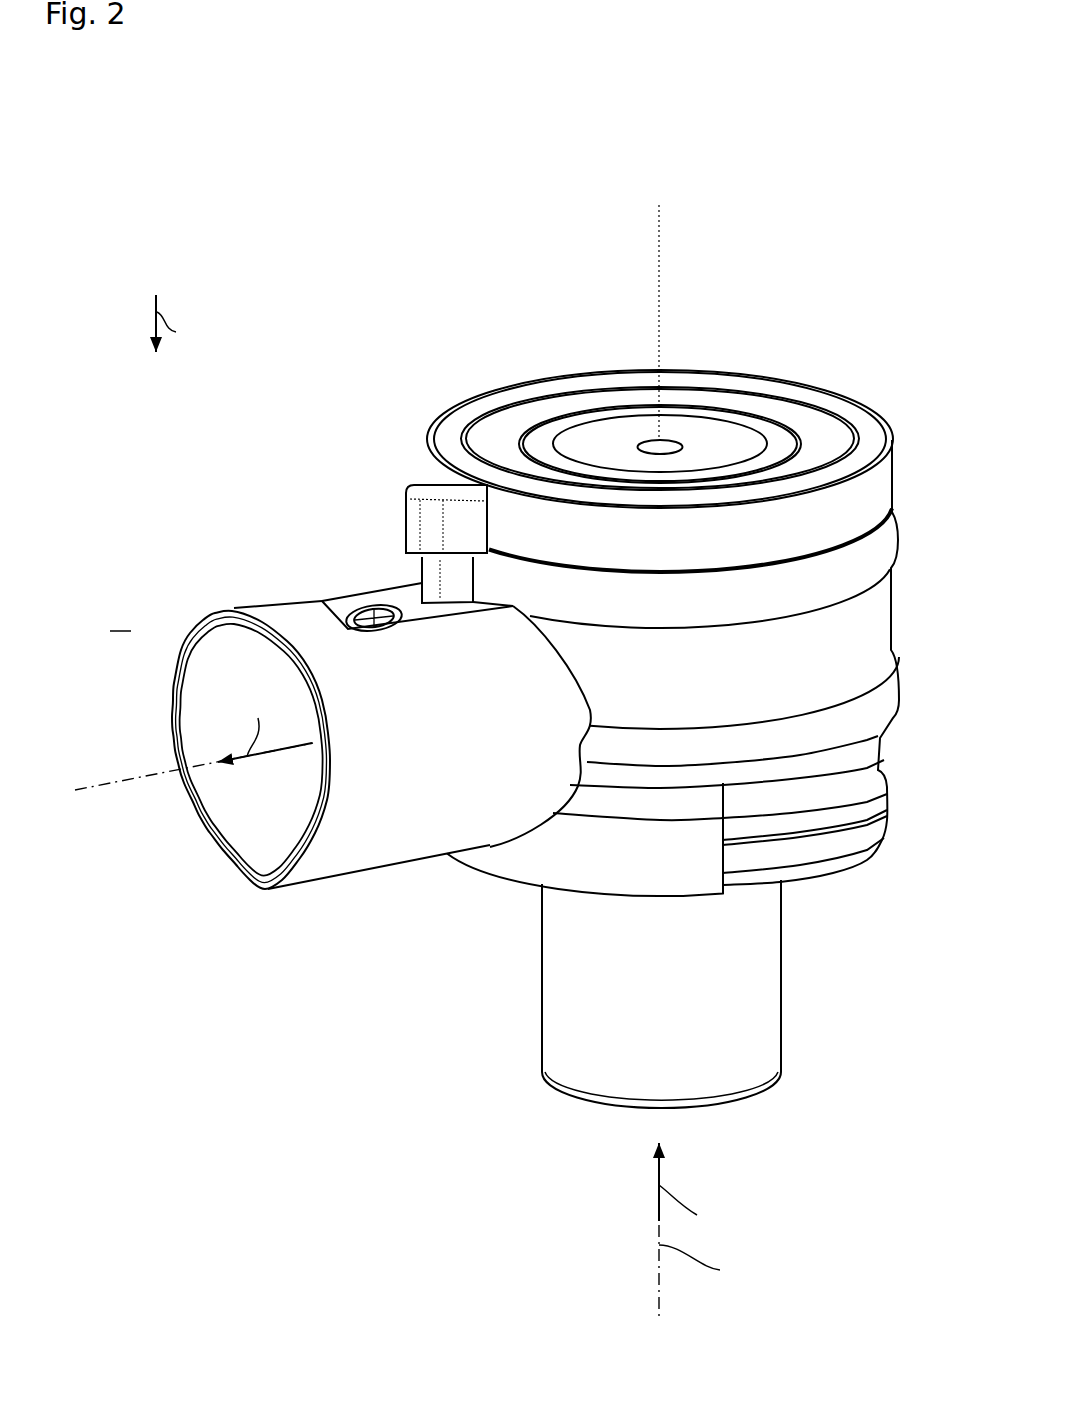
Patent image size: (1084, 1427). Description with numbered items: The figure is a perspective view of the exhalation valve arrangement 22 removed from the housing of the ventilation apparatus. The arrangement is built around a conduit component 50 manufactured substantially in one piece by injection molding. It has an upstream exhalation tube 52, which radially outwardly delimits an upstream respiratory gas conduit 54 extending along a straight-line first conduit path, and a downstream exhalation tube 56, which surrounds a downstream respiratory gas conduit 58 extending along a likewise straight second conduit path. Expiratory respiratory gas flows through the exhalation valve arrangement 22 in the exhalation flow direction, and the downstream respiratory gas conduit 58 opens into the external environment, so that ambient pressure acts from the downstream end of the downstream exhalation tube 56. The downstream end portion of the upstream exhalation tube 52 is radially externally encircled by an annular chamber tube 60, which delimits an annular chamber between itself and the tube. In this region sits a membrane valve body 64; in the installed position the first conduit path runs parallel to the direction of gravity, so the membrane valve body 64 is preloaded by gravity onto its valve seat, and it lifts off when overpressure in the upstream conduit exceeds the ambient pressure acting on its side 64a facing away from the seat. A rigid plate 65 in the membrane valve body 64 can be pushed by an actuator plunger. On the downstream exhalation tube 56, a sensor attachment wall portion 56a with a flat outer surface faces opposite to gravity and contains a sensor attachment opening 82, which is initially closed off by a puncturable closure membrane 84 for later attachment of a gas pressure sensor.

The exhalation valve arrangement 22 is at (320, 267).
The conduit component 50 is at (931, 525).
The upstream exhalation tube 52 is at (646, 1024).
The upstream respiratory gas conduit 54 is at (711, 1114).
The downstream exhalation tube 56 is at (383, 819).
The sensor attachment wall portion 56a is at (395, 565).
The downstream respiratory gas conduit 58 is at (262, 781).
The annular chamber tube 60 is at (863, 665).
The membrane valve body 64 is at (821, 433).
The side of membrane valve body facing away from valve seat 64a is at (512, 440).
The rigid plate 65 is at (597, 432).
The sensor attachment opening 82 is at (342, 591).
The closure membrane 84 is at (378, 620).